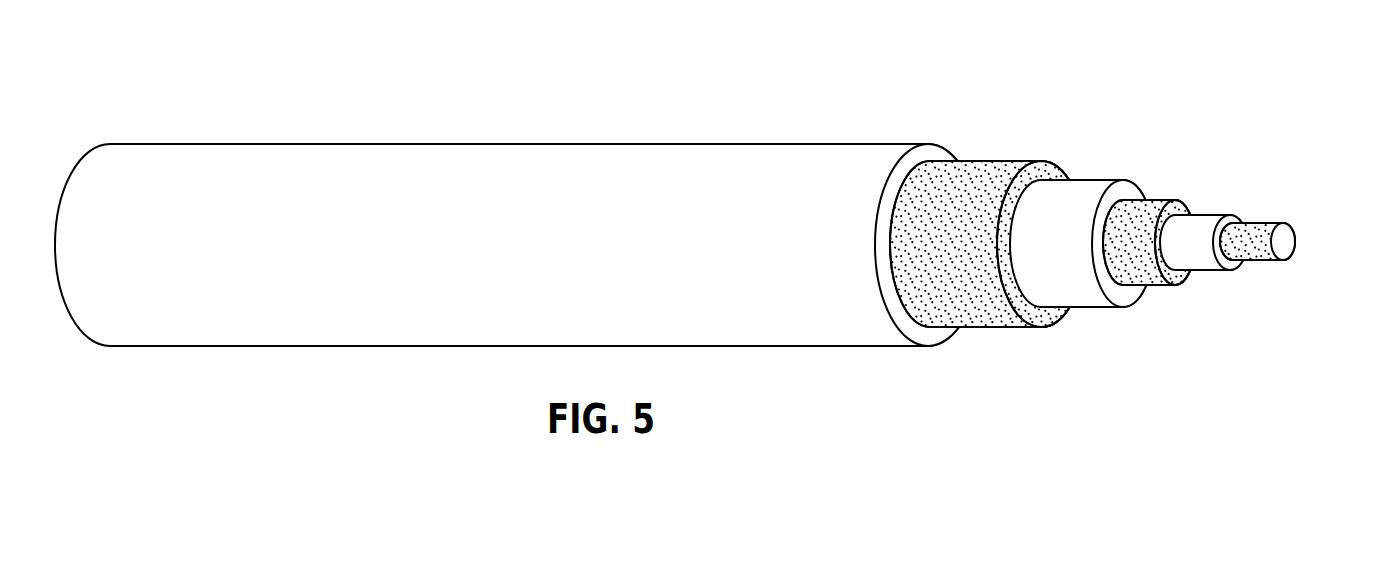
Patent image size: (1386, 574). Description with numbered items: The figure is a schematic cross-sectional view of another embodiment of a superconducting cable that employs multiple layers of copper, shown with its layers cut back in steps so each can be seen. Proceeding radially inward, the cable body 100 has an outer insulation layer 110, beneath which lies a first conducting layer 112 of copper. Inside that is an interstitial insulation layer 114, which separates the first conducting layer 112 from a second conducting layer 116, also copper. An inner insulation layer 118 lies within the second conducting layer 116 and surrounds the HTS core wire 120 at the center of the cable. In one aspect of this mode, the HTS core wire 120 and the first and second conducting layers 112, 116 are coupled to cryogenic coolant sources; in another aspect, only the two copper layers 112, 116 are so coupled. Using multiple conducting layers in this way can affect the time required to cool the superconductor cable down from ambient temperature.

The cable body 100 is at (692, 136).
The outer insulation layer 110 is at (940, 148).
The first conducting layer 112 is at (982, 160).
The interstitial insulation layer 114 is at (1093, 180).
The second conducting layer 116 is at (1163, 200).
The inner insulation layer 118 is at (1208, 214).
The HTS core wire 120 is at (1266, 224).